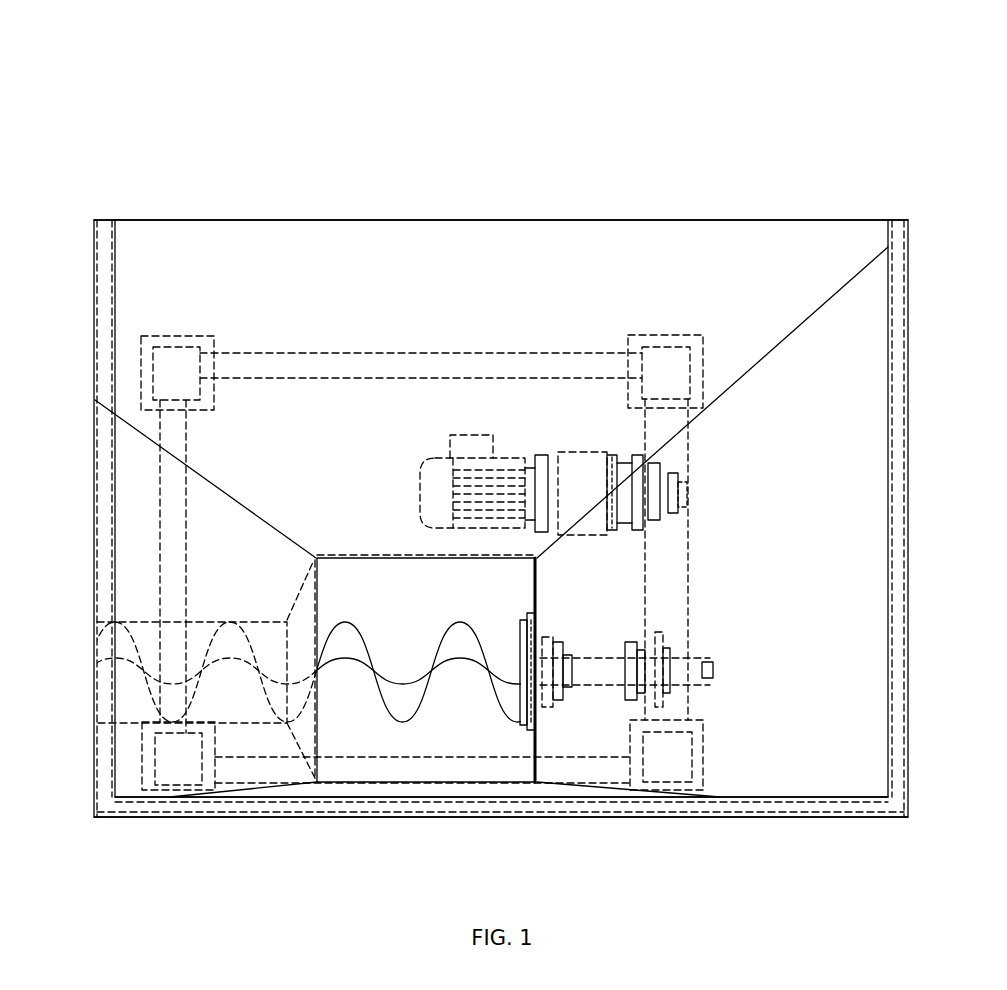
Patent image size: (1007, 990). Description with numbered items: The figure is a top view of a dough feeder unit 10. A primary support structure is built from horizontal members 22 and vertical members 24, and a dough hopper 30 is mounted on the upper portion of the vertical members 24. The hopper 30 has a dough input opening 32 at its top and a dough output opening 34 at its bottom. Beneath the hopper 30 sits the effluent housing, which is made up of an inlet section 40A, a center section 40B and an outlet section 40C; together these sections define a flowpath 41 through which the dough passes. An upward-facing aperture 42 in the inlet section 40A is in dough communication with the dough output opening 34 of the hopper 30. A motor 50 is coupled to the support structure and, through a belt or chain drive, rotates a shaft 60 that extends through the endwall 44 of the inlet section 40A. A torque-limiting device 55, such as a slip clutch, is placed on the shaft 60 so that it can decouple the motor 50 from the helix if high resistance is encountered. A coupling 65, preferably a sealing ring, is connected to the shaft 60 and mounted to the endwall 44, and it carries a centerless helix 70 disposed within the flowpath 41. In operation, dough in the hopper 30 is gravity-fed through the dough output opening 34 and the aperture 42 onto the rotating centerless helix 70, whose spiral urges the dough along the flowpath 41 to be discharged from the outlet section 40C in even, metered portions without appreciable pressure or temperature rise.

The dough feeder unit 10 is at (185, 109).
The horizontal members 22 is at (592, 777).
The vertical members 24 is at (680, 760).
The dough hopper 30 is at (780, 358).
The dough input opening 32 is at (276, 230).
The dough output opening 34 is at (477, 737).
The inlet section 40A is at (407, 783).
The center section 40B is at (132, 727).
The outlet section 40C is at (97, 682).
The flowpath 41 is at (230, 688).
The upward-facing aperture 42 is at (341, 565).
The endwall 44 is at (532, 600).
The motor 50 is at (593, 460).
The torque-limiting device 55 is at (660, 640).
The shaft 60 is at (597, 662).
The coupling 65 is at (540, 712).
The centerless helix 70 is at (390, 700).